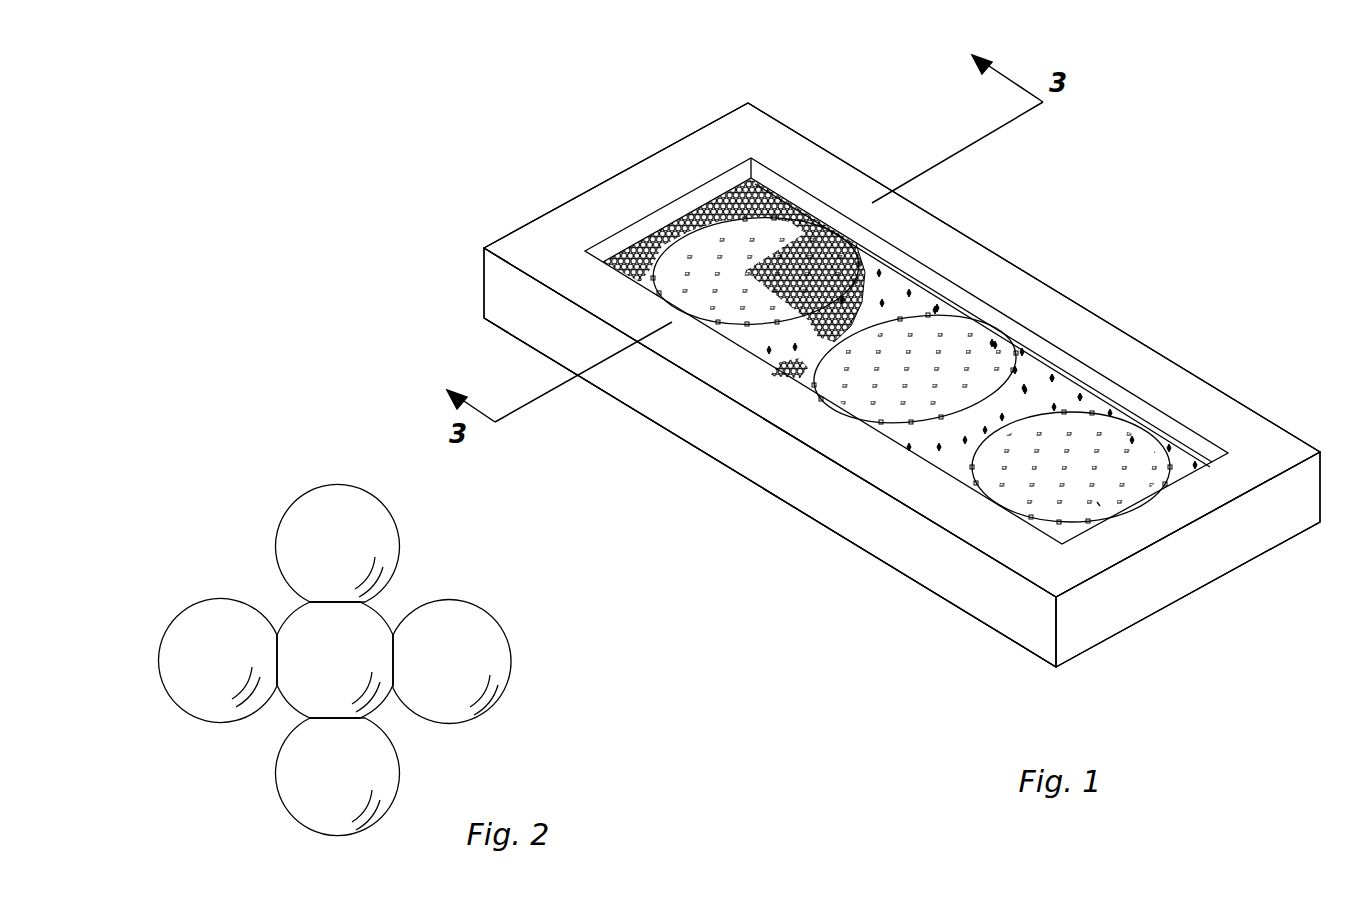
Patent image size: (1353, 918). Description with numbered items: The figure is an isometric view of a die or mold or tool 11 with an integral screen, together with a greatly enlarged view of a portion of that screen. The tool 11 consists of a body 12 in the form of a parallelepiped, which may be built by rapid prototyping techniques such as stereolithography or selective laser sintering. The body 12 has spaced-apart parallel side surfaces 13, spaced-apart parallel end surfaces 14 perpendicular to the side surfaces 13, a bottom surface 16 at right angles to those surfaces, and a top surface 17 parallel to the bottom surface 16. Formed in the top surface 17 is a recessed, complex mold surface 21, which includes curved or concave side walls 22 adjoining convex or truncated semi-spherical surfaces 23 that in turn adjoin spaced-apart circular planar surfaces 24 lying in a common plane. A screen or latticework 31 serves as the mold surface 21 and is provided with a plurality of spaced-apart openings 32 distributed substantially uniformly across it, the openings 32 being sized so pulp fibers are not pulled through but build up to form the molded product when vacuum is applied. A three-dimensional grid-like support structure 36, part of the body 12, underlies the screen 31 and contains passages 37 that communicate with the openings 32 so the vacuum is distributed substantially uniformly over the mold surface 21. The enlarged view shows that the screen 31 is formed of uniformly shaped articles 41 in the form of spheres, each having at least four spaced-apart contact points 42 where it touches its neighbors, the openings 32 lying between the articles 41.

In FIG. 1, the die or mold or tool 11 is at (676, 105).
In FIG. 1, the body 12 is at (812, 140).
In FIG. 1, the side surfaces 13 is at (885, 178).
In FIG. 1, the end surfaces 14 is at (1178, 585).
In FIG. 1, the bottom surface 16 is at (998, 628).
In FIG. 1, the top surface 17 is at (970, 535).
In FIG. 1, the mold surface 21 is at (1064, 398).
In FIG. 1, the curved or concave side walls 22 is at (1092, 407).
In FIG. 1, the convex or truncated semi-spherical surfaces 23 is at (660, 243).
In FIG. 1, the circular planar surfaces 24 is at (940, 325).
In FIG. 1, the screen or latticework 31 is at (822, 375).
In FIG. 2, the openings 32 is at (400, 602).
In FIG. 1, the grid-like support structure 36 is at (677, 260).
In FIG. 1, the passages 37 is at (1097, 502).
In FIG. 2, the uniformly shaped articles 41 is at (328, 488).
In FIG. 2, the contact points 42 is at (277, 637).